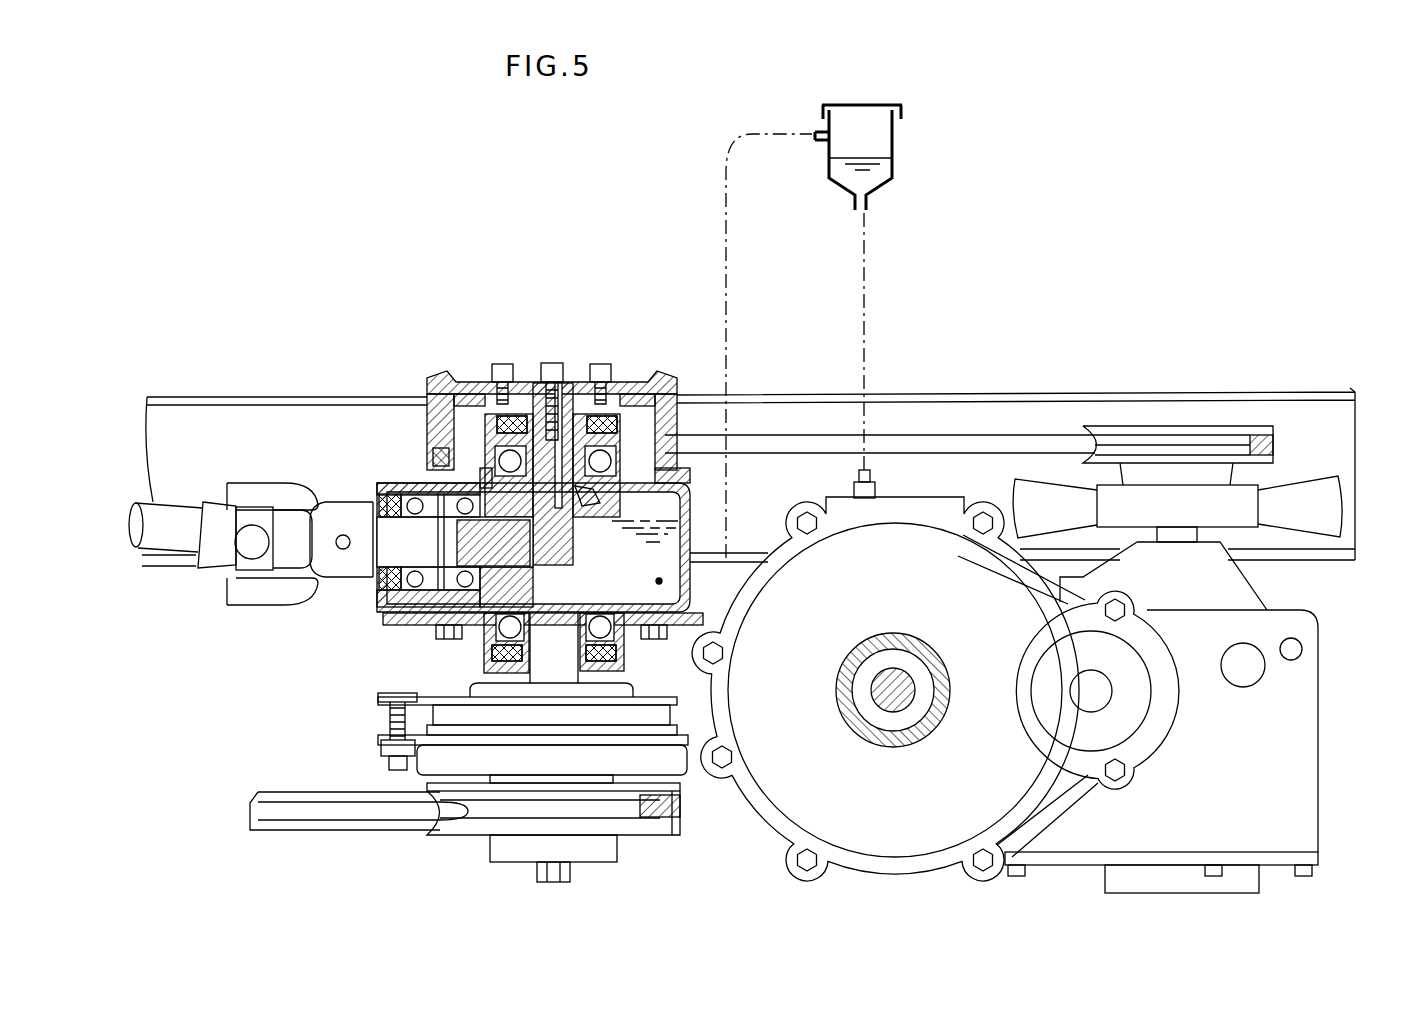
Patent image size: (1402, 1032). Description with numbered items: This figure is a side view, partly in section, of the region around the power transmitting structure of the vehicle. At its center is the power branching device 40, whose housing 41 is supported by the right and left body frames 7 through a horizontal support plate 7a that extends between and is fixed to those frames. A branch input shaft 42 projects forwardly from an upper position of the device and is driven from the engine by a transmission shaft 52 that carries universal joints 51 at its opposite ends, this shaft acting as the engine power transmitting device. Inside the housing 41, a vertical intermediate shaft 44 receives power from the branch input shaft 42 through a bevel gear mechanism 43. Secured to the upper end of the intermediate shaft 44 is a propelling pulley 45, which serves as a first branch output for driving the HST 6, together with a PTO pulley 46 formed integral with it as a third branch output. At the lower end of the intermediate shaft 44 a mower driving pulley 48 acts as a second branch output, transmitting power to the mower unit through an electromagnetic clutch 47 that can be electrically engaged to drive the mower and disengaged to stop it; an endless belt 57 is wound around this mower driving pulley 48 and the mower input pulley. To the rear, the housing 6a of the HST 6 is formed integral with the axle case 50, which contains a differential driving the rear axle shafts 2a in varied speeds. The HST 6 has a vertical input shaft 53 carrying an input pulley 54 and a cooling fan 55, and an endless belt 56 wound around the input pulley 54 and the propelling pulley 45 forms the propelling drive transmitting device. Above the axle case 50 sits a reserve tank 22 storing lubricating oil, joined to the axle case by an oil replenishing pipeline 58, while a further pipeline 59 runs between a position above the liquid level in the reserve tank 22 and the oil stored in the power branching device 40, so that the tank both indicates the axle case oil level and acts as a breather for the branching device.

The body frames 7 is at (200, 397).
The horizontal support plate 7a is at (386, 620).
The reserve tank 22 is at (893, 166).
The oil replenishing pipeline 58 is at (867, 262).
The pipeline 59 is at (724, 292).
The power branching device 40 is at (693, 484).
The housing 41 is at (662, 581).
The branch input shaft 42 is at (380, 540).
The bevel gear mechanism 43 is at (599, 499).
The vertical intermediate shaft 44 is at (573, 574).
The propelling pulley 45 is at (436, 456).
The PTO pulley 46 is at (440, 378).
The electromagnetic clutch 47 is at (470, 714).
The mower driving pulley 48 is at (459, 836).
The axle case 50 is at (793, 800).
The universal joints 51 is at (240, 606).
The transmission shaft 52 is at (165, 512).
The vertical input shaft 53 is at (1178, 535).
The input pulley 54 is at (1180, 426).
The cooling fan 55 is at (1325, 492).
The endless belt 56 is at (985, 437).
The endless belt 57 is at (297, 791).
The rear axle shafts 2a is at (894, 706).
The HST 6 is at (1318, 811).
The housing 6a is at (1318, 745).